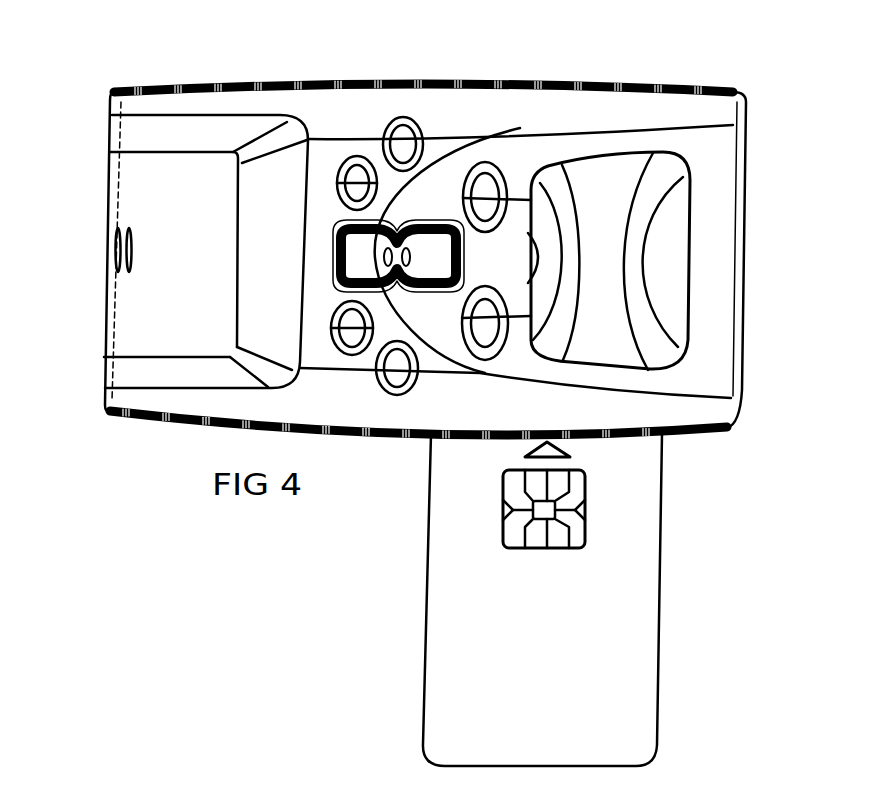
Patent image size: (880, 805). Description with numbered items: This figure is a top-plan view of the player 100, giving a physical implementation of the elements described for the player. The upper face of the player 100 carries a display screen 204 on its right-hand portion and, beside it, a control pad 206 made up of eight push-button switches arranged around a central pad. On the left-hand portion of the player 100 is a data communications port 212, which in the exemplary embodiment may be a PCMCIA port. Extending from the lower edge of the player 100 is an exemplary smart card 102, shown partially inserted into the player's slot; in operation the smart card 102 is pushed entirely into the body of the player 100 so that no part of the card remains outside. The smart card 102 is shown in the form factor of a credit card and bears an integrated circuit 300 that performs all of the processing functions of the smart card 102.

The player 100 is at (717, 93).
The smart card 102 is at (657, 560).
The display screen 204 is at (677, 258).
The control pad 206 is at (463, 116).
The data communications port 212 is at (117, 320).
The integrated circuit 300 is at (528, 552).